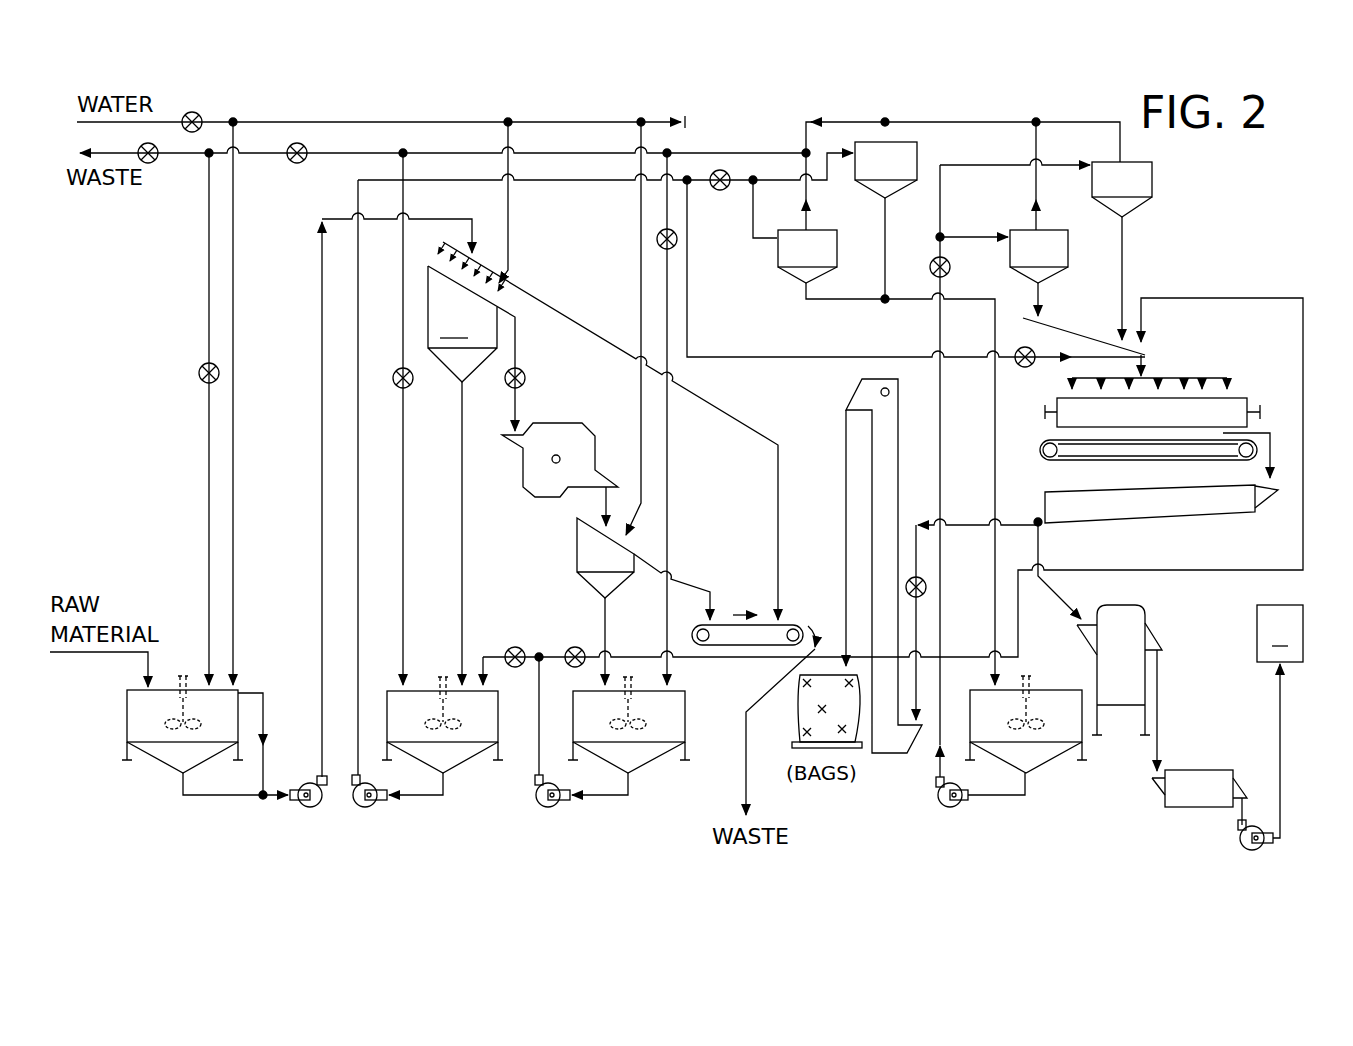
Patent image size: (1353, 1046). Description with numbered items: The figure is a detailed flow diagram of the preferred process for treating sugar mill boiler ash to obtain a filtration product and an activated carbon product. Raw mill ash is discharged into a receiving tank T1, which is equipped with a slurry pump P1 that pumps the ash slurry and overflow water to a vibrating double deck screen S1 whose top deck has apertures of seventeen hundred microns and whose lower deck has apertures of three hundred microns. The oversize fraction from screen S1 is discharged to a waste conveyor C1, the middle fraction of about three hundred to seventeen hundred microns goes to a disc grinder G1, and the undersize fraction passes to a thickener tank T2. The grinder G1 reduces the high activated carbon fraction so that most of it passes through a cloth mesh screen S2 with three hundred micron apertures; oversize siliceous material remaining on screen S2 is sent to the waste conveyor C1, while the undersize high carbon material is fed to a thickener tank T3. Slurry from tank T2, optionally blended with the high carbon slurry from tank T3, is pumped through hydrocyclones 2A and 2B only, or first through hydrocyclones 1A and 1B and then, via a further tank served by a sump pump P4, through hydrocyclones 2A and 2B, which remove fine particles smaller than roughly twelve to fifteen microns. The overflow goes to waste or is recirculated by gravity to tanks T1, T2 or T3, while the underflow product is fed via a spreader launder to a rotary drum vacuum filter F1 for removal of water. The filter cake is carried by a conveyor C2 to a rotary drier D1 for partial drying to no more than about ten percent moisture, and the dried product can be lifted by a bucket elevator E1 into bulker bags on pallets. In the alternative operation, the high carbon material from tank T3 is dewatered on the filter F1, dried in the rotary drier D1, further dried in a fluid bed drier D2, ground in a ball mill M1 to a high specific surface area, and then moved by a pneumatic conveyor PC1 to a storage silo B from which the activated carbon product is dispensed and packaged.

The hydrocyclone 1A is at (837, 249).
The hydrocyclone 1B is at (917, 152).
The hydrocyclone 2A is at (1068, 248).
The hydrocyclone 2B is at (1152, 176).
The vibrating double deck screen S1 is at (603, 431).
The cloth mesh screen S2 is at (577, 545).
The disc grinder G1 is at (547, 398).
The waste conveyor C1 is at (783, 623).
The conveyor C2 is at (1102, 462).
The bucket elevator E1 is at (889, 450).
The rotary drum vacuum filter F1 is at (1152, 402).
The rotary drier D1 is at (1145, 520).
The fluid bed drier D2 is at (1145, 620).
The receiving tank T1 is at (127, 722).
The thickener tank T2 is at (477, 756).
The thickener tank T3 is at (645, 757).
The slurry pump P1 is at (300, 806).
The sump pump P4 is at (940, 803).
The ball mill M1 is at (1165, 795).
The pneumatic conveyor PC1 is at (1237, 838).
The storage silo B is at (1280, 633).